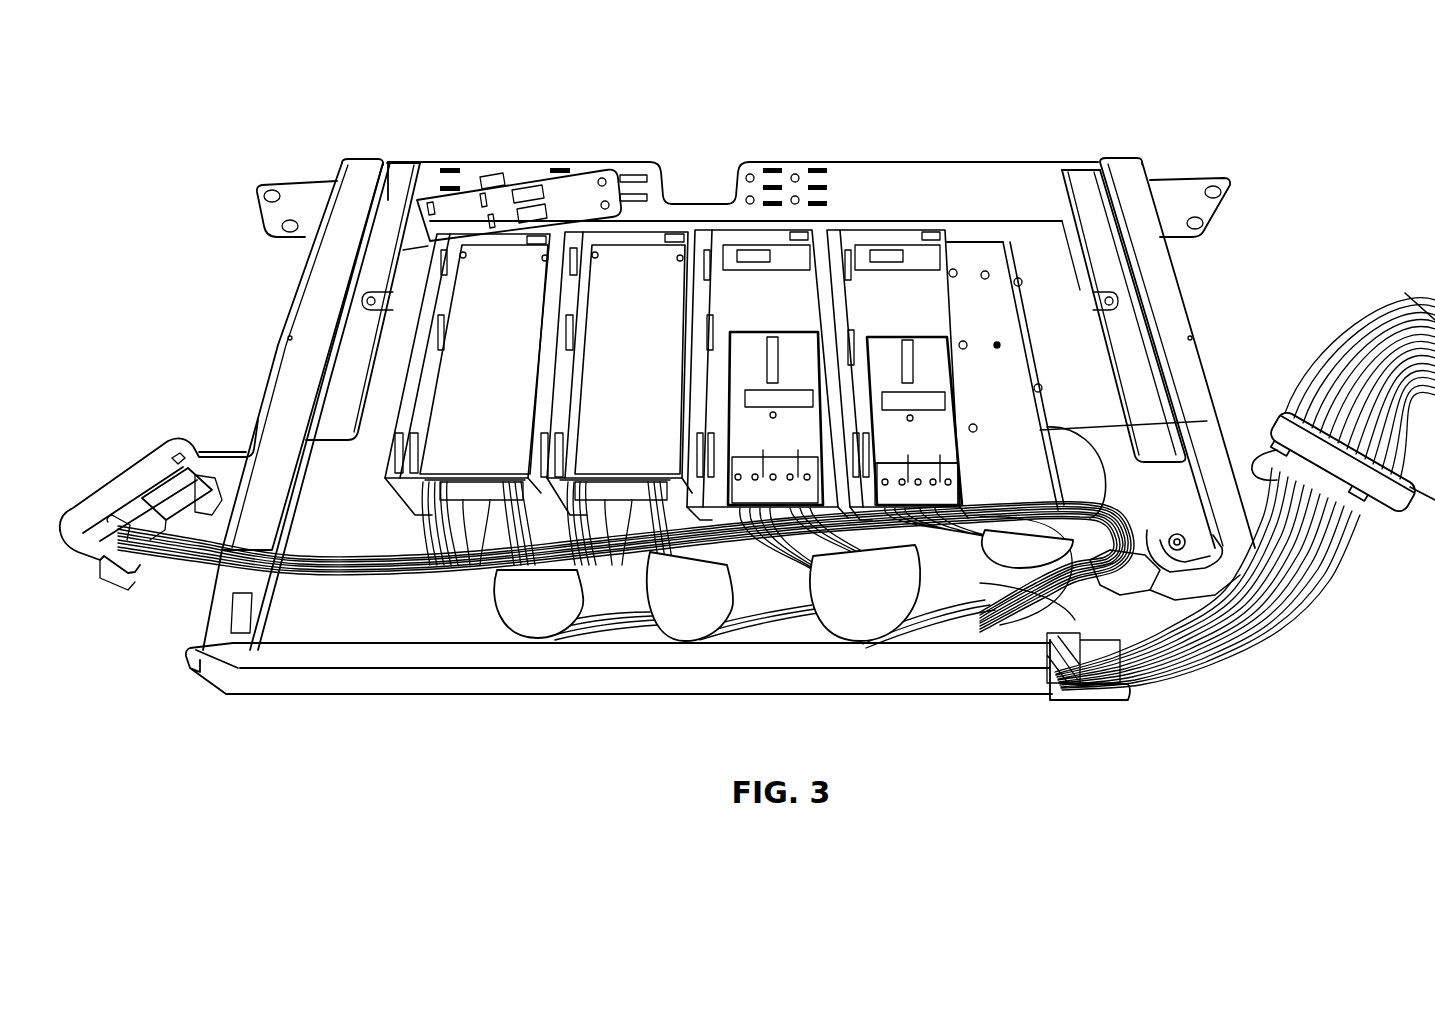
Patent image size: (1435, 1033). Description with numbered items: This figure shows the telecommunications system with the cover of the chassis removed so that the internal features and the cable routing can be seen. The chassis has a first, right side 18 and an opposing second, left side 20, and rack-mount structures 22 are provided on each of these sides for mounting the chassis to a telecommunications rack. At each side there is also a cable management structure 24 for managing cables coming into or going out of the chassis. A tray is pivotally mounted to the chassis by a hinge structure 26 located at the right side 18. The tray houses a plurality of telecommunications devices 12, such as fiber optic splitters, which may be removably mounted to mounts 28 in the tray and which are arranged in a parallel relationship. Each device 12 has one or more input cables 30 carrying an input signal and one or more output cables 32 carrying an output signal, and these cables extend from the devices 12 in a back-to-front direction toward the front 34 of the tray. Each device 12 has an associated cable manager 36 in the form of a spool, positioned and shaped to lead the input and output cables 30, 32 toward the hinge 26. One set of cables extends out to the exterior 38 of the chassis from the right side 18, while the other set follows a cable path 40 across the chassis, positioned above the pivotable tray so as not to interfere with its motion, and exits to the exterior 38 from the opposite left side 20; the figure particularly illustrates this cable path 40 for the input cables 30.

The telecommunications device 12 is at (633, 272).
The first side 18 is at (1196, 343).
The second side 20 is at (233, 348).
The rack-mount structure 22 is at (297, 183).
The cable management structure 24 is at (127, 473).
The hinge structure 26 is at (1250, 558).
The mount 28 is at (440, 293).
The input cable 30 is at (362, 568).
The output cable 32 is at (1300, 600).
The front 34 is at (666, 679).
The cable manager 36 is at (533, 624).
The exterior 38 is at (175, 588).
The cable path 40 is at (963, 479).